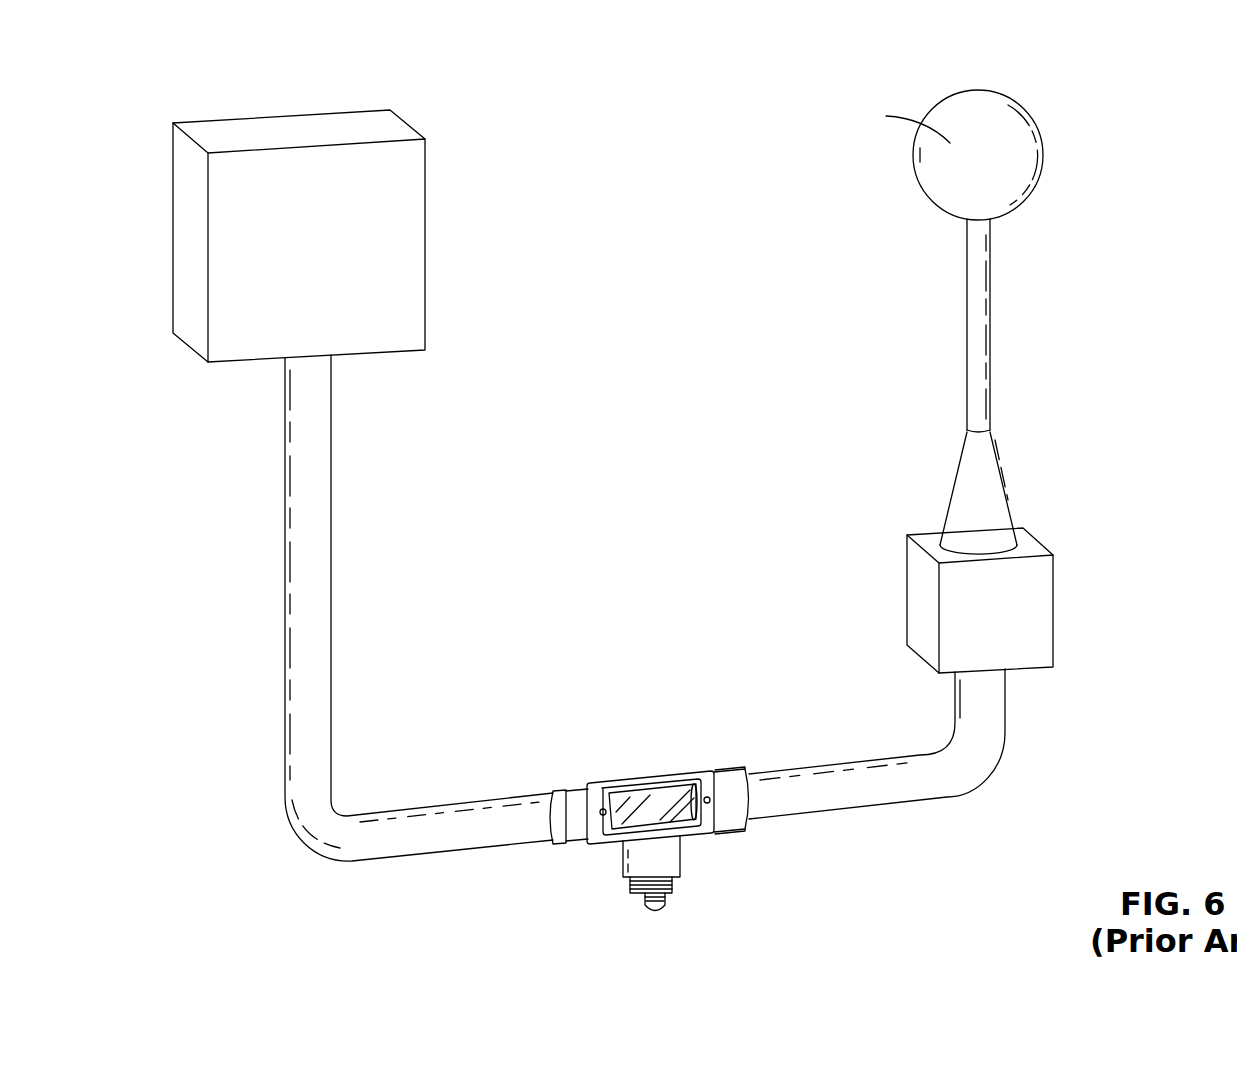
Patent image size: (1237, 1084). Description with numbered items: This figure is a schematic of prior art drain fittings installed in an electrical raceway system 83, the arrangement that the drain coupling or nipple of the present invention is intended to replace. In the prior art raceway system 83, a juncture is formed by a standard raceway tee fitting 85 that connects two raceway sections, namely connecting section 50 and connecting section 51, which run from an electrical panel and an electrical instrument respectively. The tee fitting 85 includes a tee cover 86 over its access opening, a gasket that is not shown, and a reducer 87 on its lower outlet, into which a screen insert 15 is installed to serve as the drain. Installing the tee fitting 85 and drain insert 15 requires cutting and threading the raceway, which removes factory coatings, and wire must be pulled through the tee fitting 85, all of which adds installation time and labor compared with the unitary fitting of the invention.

The prior art raceway system 83 is at (512, 77).
The connecting section 50 is at (385, 844).
The connecting section 51 is at (870, 788).
The raceway tee fitting 85 is at (574, 798).
The tee cover 86 is at (654, 802).
The reducer 87 is at (628, 886).
The screen insert 15 is at (664, 906).